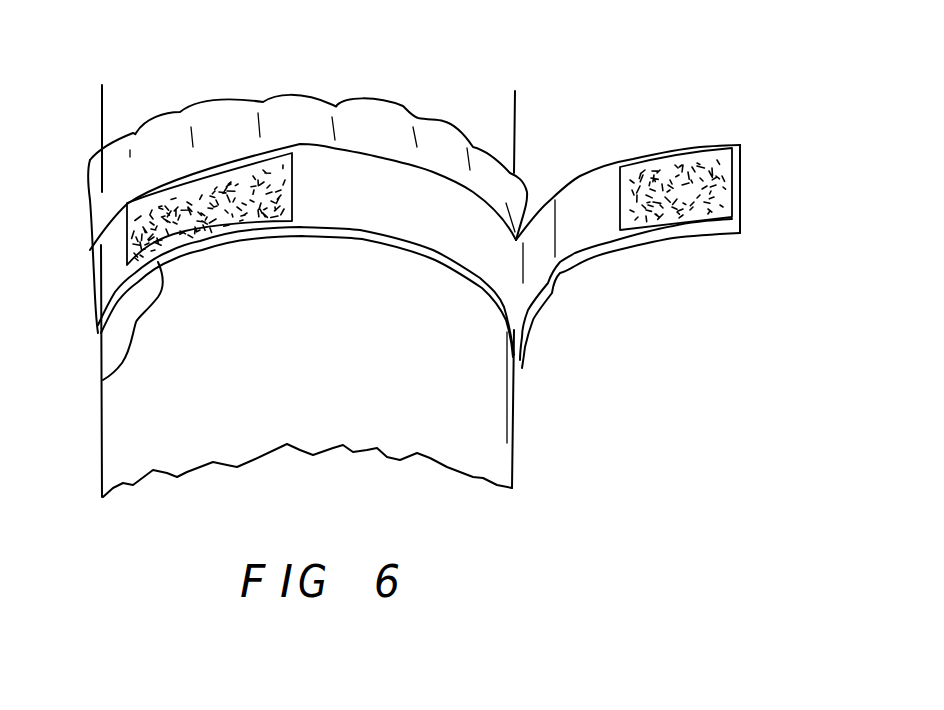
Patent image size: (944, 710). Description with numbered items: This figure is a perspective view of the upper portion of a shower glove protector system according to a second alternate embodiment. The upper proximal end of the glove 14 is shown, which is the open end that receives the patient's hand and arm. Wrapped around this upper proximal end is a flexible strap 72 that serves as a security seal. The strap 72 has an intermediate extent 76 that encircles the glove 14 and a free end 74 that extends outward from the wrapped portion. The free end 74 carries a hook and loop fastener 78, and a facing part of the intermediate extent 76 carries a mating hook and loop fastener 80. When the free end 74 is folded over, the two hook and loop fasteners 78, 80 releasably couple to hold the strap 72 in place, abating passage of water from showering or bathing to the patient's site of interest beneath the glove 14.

The glove 14 is at (511, 452).
The strap 72 is at (103, 379).
The free end 74 is at (740, 170).
The intermediate extent 76 is at (377, 180).
The hook and loop fastener 78 is at (633, 175).
The hook and loop fastener 80 is at (190, 205).